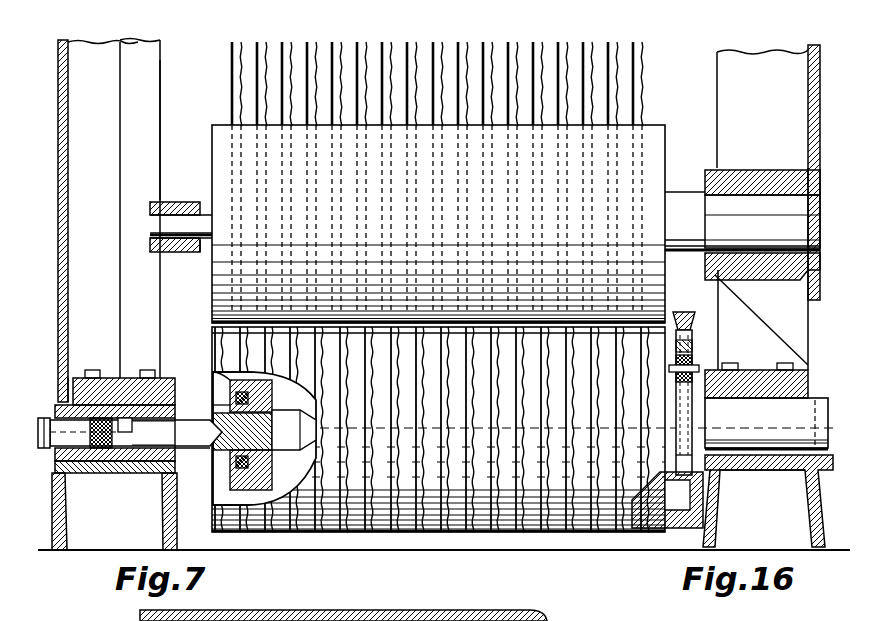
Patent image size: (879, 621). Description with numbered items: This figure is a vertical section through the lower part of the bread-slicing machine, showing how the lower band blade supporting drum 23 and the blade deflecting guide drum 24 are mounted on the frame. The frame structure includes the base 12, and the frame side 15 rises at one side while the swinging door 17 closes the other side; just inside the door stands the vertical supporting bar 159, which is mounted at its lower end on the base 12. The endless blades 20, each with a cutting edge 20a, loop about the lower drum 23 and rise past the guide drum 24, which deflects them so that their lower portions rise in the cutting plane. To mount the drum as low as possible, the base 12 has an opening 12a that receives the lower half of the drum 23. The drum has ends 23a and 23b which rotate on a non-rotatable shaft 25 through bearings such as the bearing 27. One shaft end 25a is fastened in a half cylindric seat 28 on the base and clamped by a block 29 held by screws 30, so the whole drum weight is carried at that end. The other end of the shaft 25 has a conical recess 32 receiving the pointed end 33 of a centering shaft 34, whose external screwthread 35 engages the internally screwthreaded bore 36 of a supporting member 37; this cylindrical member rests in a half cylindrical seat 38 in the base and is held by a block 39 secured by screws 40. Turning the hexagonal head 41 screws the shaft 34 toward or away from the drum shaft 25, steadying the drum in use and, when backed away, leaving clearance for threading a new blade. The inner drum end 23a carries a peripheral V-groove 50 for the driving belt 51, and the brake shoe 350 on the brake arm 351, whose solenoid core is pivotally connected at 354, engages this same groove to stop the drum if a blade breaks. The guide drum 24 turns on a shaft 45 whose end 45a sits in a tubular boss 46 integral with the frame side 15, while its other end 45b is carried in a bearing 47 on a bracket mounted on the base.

The base 12 is at (65, 552).
The opening 12a is at (567, 550).
The frame side 15 is at (829, 35).
The swinging door 17 is at (60, 150).
The vertical supporting bar 159 is at (167, 101).
The endless blades 20 is at (295, 74).
The cutting edge 20a is at (377, 535).
The lower band blade supporting drum 23 is at (302, 535).
The inner drum end 23a is at (690, 503).
The drum end 23b is at (217, 382).
The blade deflecting guide drum 24 is at (654, 134).
The non-rotatable shaft 25 is at (275, 535).
The shaft end 25a is at (740, 470).
The bearing 27 is at (228, 396).
The half cylindric seat 28 is at (800, 470).
The block 29 is at (770, 375).
The screws 30 is at (786, 365).
The conical recess 32 is at (210, 450).
The pointed end 33 is at (185, 451).
The centering shaft 34 is at (165, 488).
The external screwthread 35 is at (100, 475).
The internally screwthreaded bore 36 is at (90, 468).
The supporting member 37 is at (136, 461).
The half cylindrical seat 38 is at (113, 461).
The block 39 is at (115, 378).
The screws 40 is at (93, 372).
The hexagonal head 41 is at (41, 422).
The shaft 45 is at (685, 198).
The shaft end 45a is at (732, 205).
The shaft end 45b is at (188, 204).
The tubular boss 46 is at (762, 180).
The bearing 47 is at (190, 253).
The peripheral V-groove 50 is at (693, 458).
The driving belt 51 is at (680, 370).
The brake shoe 350 is at (696, 337).
The brake arm 351 is at (710, 422).
The pivotal connection 354 is at (712, 277).